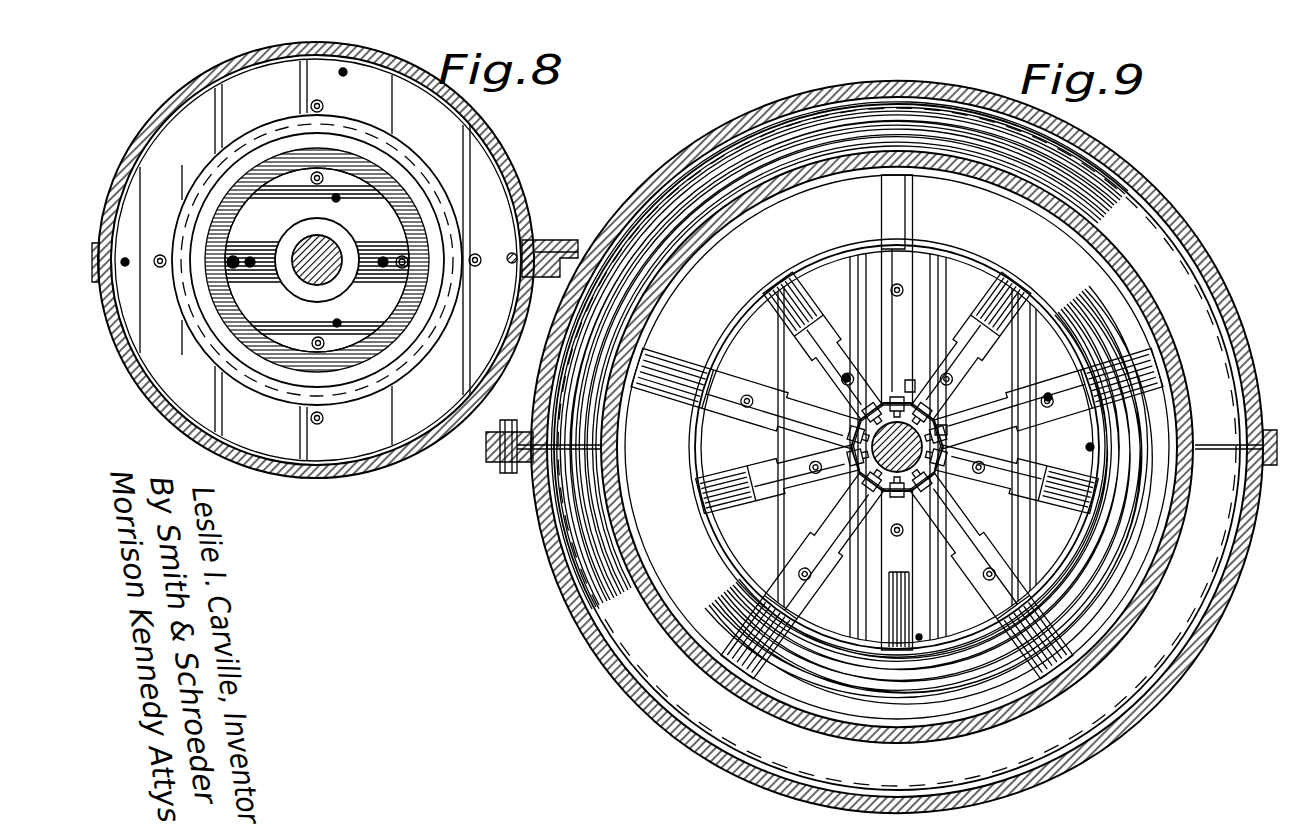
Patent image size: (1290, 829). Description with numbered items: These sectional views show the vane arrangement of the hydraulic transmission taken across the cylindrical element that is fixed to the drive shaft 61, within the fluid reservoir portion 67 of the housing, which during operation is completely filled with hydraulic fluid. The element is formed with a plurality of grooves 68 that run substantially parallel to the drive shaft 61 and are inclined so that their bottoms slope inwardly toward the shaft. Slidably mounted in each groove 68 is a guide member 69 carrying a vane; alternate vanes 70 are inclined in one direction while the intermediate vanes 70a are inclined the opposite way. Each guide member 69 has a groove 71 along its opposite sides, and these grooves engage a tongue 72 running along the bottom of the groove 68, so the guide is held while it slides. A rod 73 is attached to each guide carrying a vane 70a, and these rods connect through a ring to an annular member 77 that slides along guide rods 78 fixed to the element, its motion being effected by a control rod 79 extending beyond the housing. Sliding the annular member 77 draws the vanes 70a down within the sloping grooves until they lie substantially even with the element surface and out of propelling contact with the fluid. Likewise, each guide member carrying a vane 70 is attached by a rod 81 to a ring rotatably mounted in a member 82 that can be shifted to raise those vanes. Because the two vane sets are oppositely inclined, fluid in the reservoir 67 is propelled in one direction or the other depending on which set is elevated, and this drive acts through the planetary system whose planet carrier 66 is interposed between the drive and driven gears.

In FIG. 8, the drive shaft 61 is at (331, 238).
In FIG. 9, the planet carrier 66 is at (1140, 180).
In FIG. 9, the fluid reservoir portion 67 is at (724, 192).
In FIG. 9, the grooves 68 is at (978, 322).
In FIG. 9, the guide member 69 is at (906, 308).
In FIG. 9, the vane 70 is at (782, 281).
In FIG. 9, the vane 70a is at (913, 220).
In FIG. 9, the groove 71 is at (918, 392).
In FIG. 9, the tongue 72 is at (880, 348).
In FIG. 8, the rod 73 is at (324, 105).
In FIG. 9, the rod 73 is at (888, 290).
In FIG. 8, the annular member 77 is at (233, 358).
In FIG. 8, the guide rods 78 is at (372, 64).
In FIG. 8, the control rod 79 is at (465, 123).
In FIG. 8, the rod 81 is at (312, 182).
In FIG. 8, the member 82 is at (253, 183).